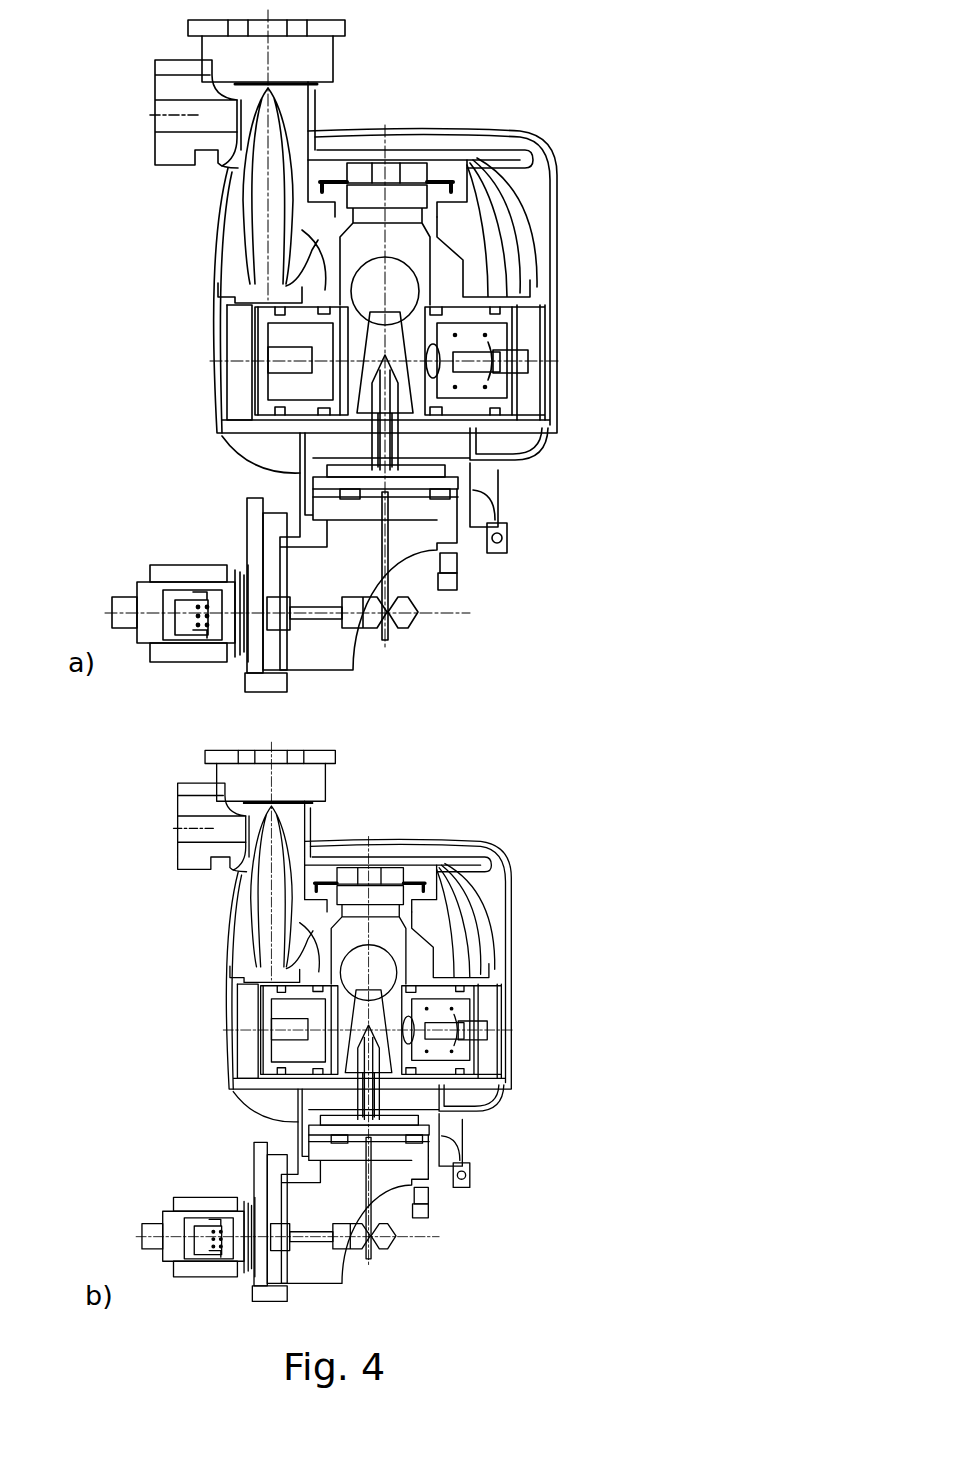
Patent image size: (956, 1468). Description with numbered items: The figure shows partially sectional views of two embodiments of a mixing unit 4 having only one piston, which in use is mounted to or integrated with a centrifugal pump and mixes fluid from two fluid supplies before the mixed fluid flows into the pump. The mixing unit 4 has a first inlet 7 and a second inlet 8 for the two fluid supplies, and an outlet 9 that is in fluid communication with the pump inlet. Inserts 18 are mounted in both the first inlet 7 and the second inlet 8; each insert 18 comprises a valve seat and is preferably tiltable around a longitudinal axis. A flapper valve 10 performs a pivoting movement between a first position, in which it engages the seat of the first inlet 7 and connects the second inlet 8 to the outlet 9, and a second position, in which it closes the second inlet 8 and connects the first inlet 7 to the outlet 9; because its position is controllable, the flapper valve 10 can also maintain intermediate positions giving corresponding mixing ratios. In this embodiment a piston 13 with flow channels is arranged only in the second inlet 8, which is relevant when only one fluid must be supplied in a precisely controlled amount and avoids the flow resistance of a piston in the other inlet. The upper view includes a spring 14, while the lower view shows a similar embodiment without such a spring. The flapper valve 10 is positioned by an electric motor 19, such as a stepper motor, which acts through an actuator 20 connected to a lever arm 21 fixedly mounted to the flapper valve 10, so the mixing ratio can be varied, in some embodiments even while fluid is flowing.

The mixing unit 4 is at (572, 110).
The first inlet 7 is at (242, 388).
The second inlet 8 is at (533, 388).
The outlet 9 is at (388, 282).
The flapper valve 10 is at (396, 440).
The piston 13 is at (465, 338).
The spring 14 is at (515, 358).
The insert 18 is at (262, 312).
The electric motor 19 is at (160, 560).
The actuator 20 is at (313, 617).
The lever arm 21 is at (386, 572).